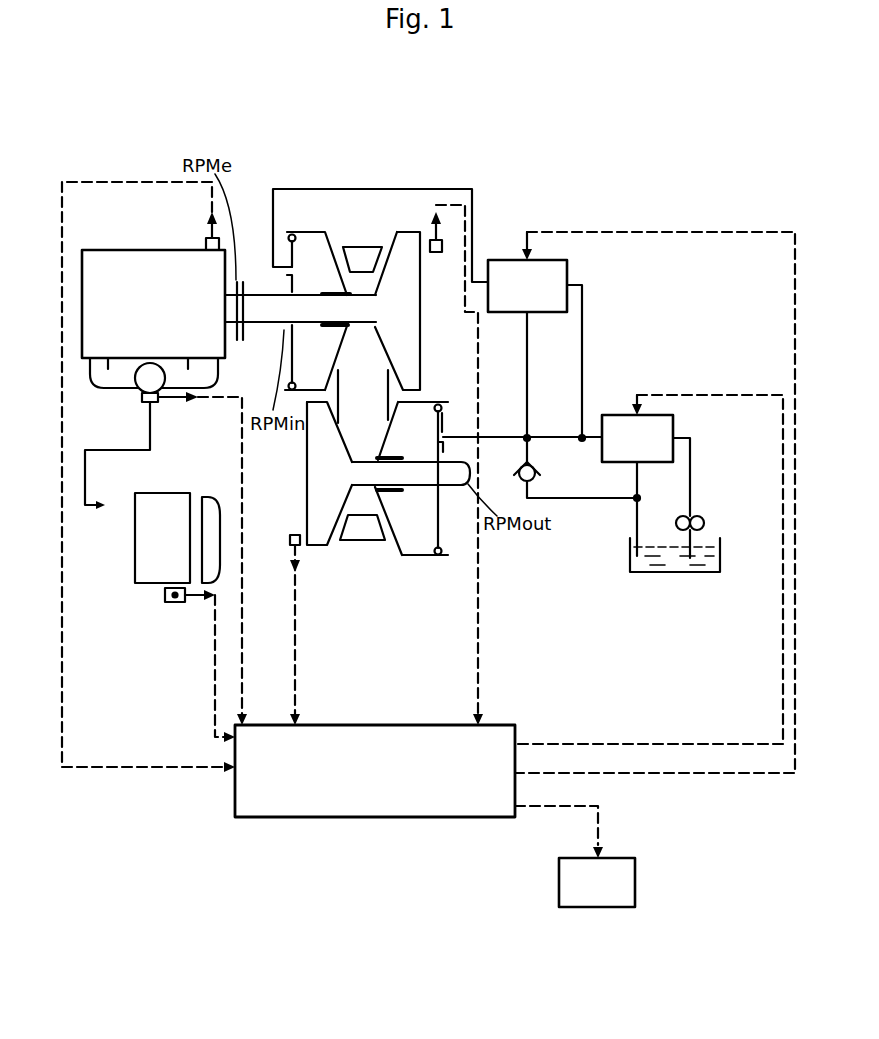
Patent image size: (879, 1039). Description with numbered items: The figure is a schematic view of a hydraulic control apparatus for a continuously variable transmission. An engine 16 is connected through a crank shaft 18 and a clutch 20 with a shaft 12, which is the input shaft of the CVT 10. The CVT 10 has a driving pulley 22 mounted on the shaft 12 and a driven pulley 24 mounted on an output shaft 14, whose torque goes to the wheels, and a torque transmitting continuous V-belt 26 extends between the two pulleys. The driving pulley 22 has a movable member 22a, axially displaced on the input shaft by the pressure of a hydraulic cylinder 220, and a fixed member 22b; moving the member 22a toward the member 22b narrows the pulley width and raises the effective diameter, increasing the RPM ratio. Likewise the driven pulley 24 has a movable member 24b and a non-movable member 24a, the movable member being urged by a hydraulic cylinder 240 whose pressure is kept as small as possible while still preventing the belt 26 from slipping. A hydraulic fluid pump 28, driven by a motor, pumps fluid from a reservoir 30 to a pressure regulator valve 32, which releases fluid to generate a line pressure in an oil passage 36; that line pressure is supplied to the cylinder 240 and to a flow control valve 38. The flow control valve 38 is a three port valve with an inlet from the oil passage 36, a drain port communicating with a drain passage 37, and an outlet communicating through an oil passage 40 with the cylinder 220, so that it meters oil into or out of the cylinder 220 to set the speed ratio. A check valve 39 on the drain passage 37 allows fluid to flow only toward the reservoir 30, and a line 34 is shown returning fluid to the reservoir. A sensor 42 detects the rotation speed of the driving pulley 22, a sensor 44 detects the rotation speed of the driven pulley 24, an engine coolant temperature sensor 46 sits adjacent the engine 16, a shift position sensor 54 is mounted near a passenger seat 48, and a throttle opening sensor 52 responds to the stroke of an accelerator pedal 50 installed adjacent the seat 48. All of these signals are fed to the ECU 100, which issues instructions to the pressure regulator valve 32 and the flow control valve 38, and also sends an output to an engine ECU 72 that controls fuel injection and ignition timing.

The continuously variable transmission 10 is at (406, 208).
The shaft 12 is at (262, 324).
The shaft 14 is at (465, 484).
The engine 16 is at (140, 262).
The crank shaft 18 is at (233, 286).
The clutch 20 is at (244, 291).
The driving pulley 22 is at (339, 230).
The movable member 22a is at (311, 244).
The fixed member 22b is at (413, 376).
The driven pulley 24 is at (343, 554).
The non-movable member 24a is at (320, 547).
The movable member 24b is at (419, 547).
The V-belt 26 is at (370, 256).
The hydraulic fluid pump 28 is at (704, 521).
The reservoir 30 is at (721, 562).
The pressure regulator valve 32 is at (660, 414).
The drain line 34 is at (635, 522).
The oil passage 36 is at (583, 365).
The drain passage 37 is at (528, 378).
The flow control valve 38 is at (568, 278).
The check valve 39 is at (541, 470).
The oil passage 40 is at (470, 230).
The sensor 42 is at (439, 253).
The sensor 44 is at (290, 538).
The engine coolant temperature sensor 46 is at (206, 242).
The passenger seat 48 is at (180, 500).
The accelerator pedal 50 is at (104, 504).
The throttle opening sensor 52 is at (143, 400).
The sensor 54 is at (178, 603).
The ECU 72 is at (618, 908).
The ECU 100 is at (423, 818).
The hydraulic cylinder 220 is at (290, 262).
The hydraulic cylinder 240 is at (410, 512).